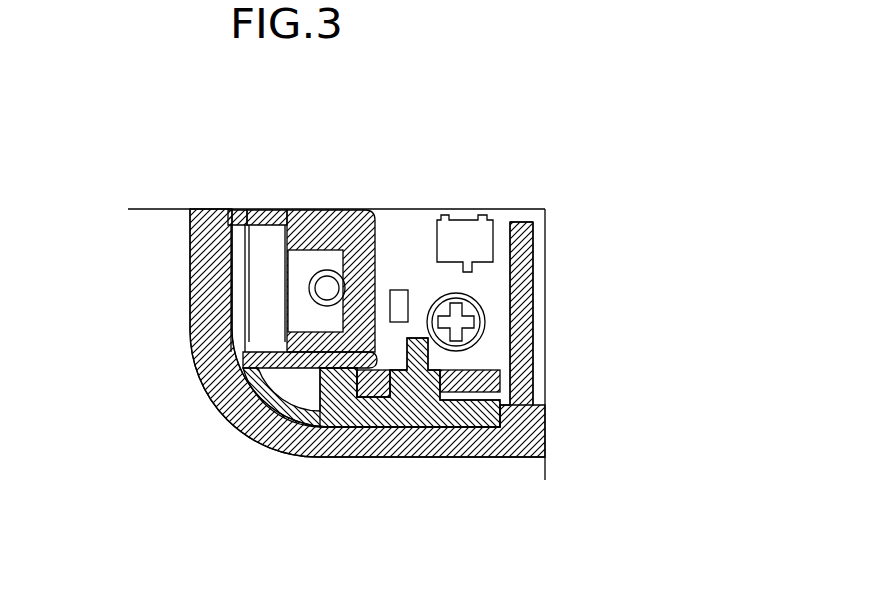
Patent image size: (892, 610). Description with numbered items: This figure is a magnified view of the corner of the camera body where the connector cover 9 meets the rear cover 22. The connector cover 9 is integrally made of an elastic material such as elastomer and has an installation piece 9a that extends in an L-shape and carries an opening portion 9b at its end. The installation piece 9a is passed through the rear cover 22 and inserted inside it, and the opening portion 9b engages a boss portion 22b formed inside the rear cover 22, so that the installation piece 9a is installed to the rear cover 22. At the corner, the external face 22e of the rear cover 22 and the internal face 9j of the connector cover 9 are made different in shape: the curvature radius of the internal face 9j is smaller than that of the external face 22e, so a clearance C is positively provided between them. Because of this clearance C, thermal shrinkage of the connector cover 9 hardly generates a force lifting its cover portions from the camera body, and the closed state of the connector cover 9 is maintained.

The connector cover 9 is at (212, 282).
The installation piece 9a is at (458, 262).
The opening portion 9b is at (433, 425).
The internal face 9j is at (243, 423).
The clearance C is at (222, 402).
The rear cover 22 is at (428, 345).
The boss portion 22b is at (420, 385).
The external face 22e is at (278, 412).